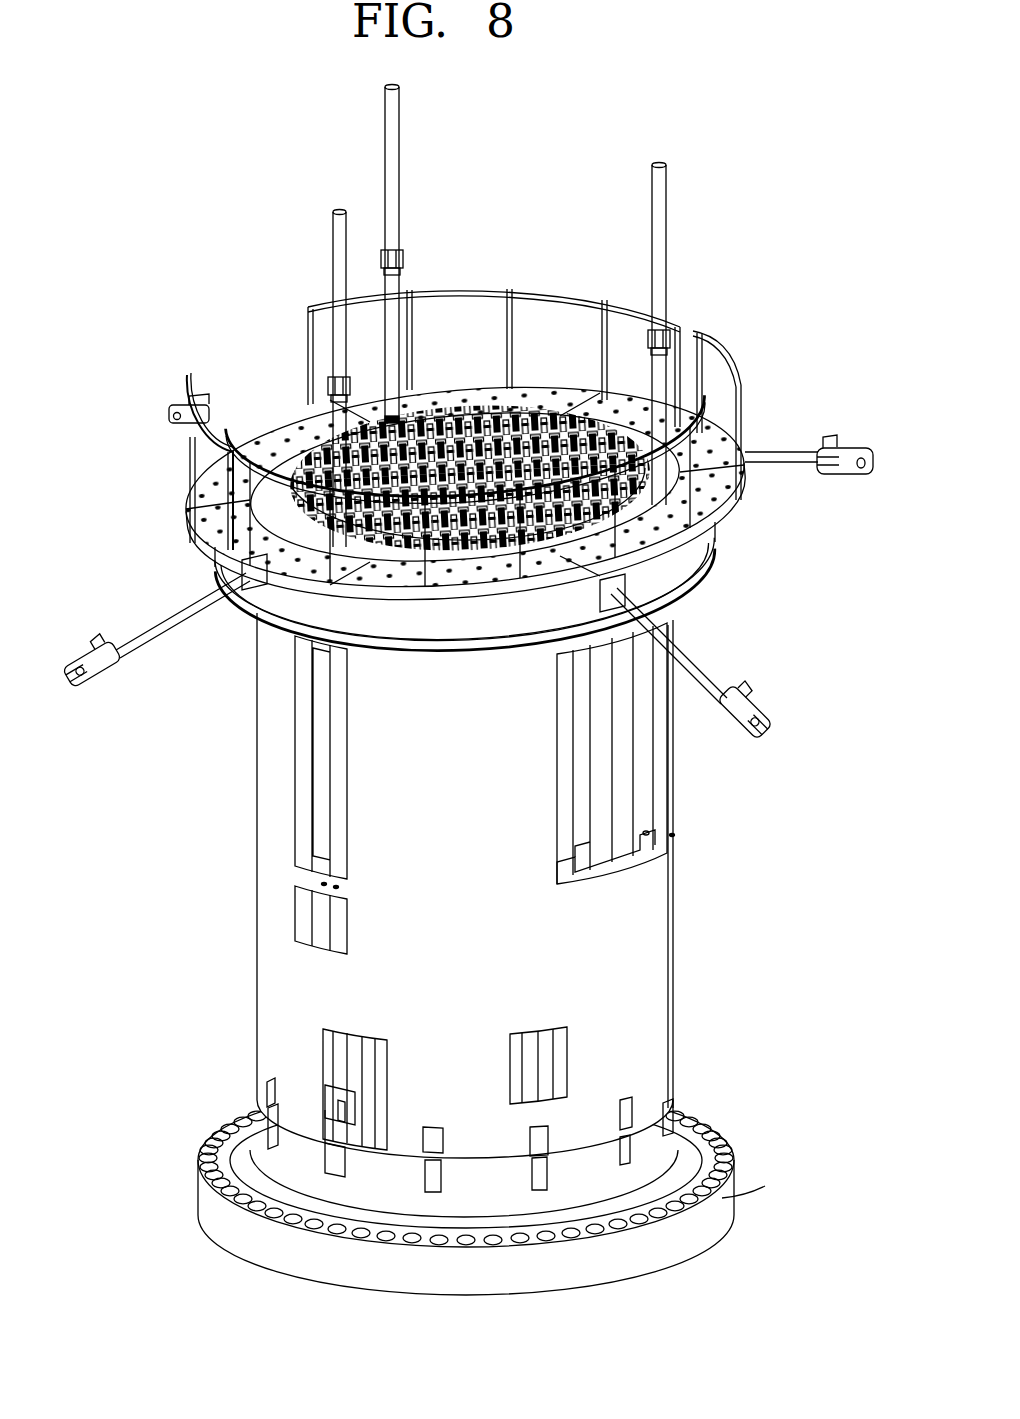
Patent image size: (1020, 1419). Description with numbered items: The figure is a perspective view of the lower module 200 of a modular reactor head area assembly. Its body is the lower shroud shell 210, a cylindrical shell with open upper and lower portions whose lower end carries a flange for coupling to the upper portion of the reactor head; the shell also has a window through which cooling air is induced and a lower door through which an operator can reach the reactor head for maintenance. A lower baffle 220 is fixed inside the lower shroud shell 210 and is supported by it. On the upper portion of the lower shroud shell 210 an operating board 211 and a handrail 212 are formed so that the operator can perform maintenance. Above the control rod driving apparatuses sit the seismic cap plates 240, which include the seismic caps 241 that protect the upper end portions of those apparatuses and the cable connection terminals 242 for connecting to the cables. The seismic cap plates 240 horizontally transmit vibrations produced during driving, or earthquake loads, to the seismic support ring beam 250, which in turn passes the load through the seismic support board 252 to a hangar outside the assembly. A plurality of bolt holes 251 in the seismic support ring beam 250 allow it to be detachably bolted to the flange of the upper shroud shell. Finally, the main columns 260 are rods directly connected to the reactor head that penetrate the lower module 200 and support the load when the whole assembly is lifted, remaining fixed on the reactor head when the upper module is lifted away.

The lower module 200 is at (465, 690).
The lower shroud shell 210 is at (636, 946).
The operating board 211 is at (705, 445).
The handrail 212 is at (466, 289).
The lower baffle 220 is at (622, 862).
The seismic cap plates 240 is at (530, 560).
The seismic caps 241 is at (395, 548).
The cable connection terminals 242 is at (492, 402).
The seismic support ring beam 250 is at (665, 505).
The bolt holes 251 is at (688, 475).
The seismic support board 252 is at (165, 420).
The main columns 260 is at (398, 105).